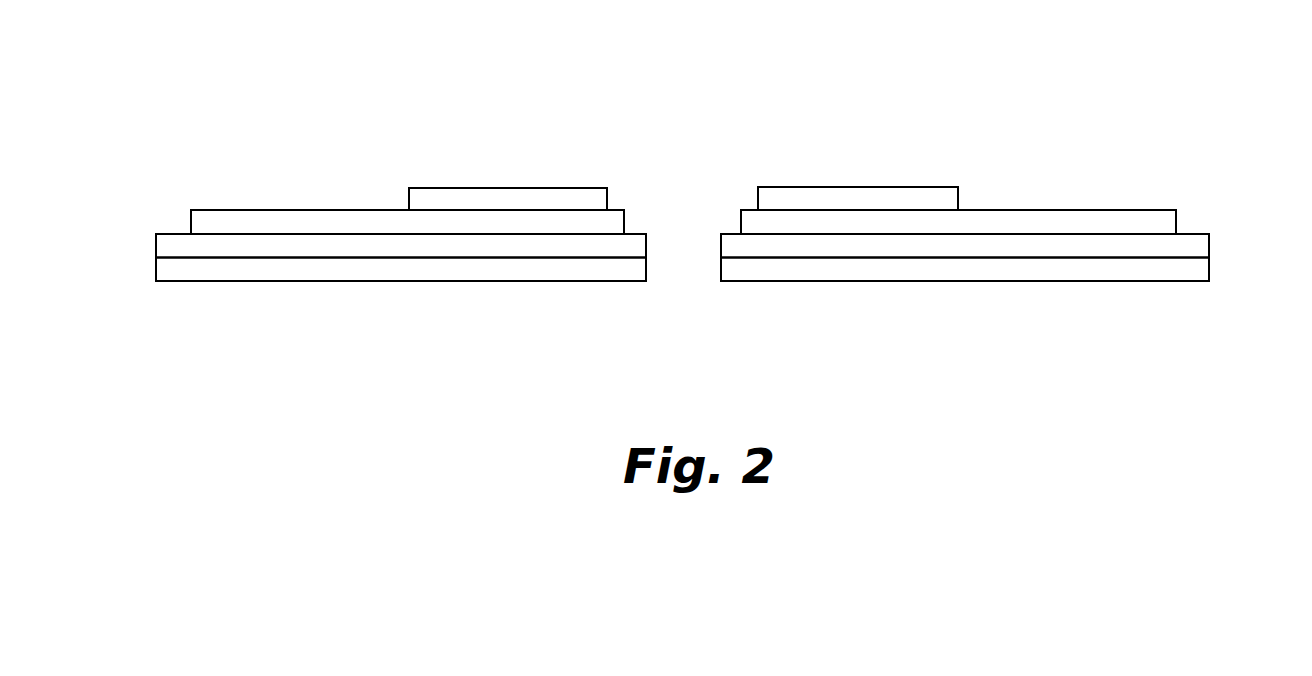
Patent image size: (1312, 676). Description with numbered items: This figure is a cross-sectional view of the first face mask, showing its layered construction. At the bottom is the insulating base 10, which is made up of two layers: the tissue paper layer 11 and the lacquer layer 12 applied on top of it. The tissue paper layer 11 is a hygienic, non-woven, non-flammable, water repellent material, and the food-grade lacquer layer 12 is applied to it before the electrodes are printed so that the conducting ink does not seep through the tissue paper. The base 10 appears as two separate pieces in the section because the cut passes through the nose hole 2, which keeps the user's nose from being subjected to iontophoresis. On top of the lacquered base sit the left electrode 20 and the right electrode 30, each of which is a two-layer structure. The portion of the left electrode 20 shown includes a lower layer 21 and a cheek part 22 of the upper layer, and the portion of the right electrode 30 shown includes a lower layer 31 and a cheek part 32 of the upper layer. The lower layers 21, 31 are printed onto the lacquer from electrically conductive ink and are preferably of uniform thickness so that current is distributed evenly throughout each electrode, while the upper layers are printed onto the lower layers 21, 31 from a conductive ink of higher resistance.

The nose hole 2 is at (684, 267).
The insulating base 10 is at (673, 292).
The tissue paper layer 11 is at (400, 272).
The lacquer layer 12 is at (518, 248).
The left electrode 20 is at (375, 149).
The lower layer 21 is at (273, 222).
The cheek part 22 is at (482, 196).
The right electrode 30 is at (990, 145).
The lower layer 31 is at (1030, 205).
The cheek part 32 is at (836, 197).